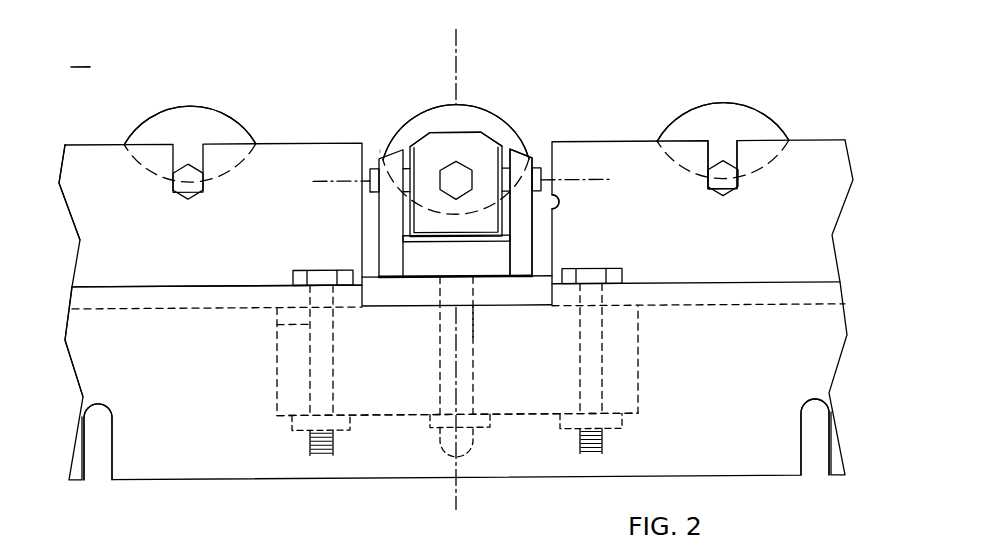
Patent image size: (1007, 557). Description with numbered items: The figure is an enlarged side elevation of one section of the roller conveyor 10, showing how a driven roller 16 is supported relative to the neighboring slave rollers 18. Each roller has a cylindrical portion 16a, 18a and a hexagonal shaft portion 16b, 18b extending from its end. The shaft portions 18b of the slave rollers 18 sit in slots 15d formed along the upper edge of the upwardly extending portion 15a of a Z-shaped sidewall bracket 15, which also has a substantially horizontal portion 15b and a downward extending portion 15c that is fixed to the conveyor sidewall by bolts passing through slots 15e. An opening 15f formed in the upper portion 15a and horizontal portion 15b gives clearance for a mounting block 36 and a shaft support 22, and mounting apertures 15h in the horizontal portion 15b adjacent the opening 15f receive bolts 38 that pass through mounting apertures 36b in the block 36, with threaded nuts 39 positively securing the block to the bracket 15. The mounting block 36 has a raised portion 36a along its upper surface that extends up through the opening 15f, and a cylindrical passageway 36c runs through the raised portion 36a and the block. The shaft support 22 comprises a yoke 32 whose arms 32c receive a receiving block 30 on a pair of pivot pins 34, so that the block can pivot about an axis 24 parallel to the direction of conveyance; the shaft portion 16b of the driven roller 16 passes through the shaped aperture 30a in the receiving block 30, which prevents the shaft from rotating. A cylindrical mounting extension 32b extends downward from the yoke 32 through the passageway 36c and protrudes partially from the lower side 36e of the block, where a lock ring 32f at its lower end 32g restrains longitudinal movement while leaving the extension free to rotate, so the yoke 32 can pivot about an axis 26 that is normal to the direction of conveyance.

The roller conveyor 10 is at (80, 57).
The sidewall bracket 15 is at (825, 347).
The upwardly extending portion 15a is at (72, 178).
The horizontal portion 15b is at (98, 288).
The downward extending portion 15c is at (83, 368).
The slots 15d is at (733, 147).
The slots 15e is at (110, 451).
The opening 15f is at (560, 210).
The mounting apertures 15h is at (308, 300).
The driven roller 16 is at (435, 108).
The cylindrical portion 16a is at (466, 105).
The shaft portion 16b is at (474, 145).
The slave rollers 18 is at (143, 135).
The cylindrical portion 18a is at (158, 110).
The shaft portion 18b is at (188, 174).
The shaft support 22 is at (391, 85).
The axis 24 is at (599, 183).
The axis 26 is at (444, 287).
The receiving block 30 is at (462, 178).
The aperture 30a is at (446, 166).
The yoke 32 is at (395, 250).
The mounting extension 32b is at (474, 393).
The arms 32c is at (519, 164).
The lock ring 32f is at (488, 423).
The lower end 32g is at (472, 458).
The pivot pins 34 is at (378, 162).
The mounting block 36 is at (640, 344).
The raised portion 36a is at (553, 279).
The mounting apertures 36b is at (277, 327).
The passageway 36c is at (479, 335).
The lower side 36e is at (398, 420).
The bolt 38 is at (322, 270).
The nut 39 is at (290, 424).